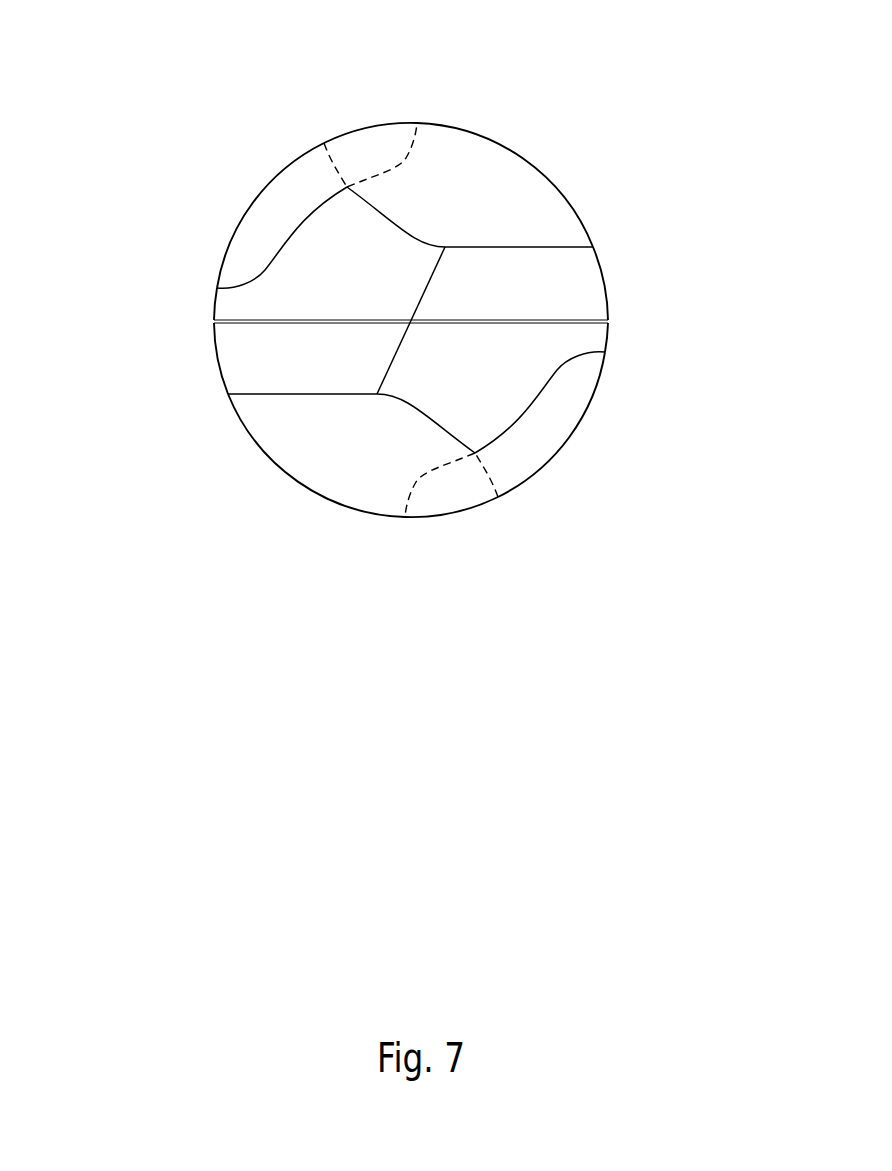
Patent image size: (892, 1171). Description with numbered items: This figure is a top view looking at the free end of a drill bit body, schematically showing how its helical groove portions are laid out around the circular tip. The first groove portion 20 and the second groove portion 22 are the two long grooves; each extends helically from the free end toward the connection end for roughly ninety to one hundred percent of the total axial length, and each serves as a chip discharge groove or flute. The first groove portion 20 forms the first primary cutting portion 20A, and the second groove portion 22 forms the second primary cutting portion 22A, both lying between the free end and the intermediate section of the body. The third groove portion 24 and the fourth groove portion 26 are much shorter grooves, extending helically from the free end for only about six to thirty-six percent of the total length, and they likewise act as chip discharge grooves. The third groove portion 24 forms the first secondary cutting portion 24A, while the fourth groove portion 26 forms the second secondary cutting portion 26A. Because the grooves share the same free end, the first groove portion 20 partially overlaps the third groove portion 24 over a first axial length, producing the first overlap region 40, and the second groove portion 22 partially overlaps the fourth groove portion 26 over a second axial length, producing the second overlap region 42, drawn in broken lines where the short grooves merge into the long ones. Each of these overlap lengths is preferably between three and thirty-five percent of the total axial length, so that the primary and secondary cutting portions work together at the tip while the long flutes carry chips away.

The first groove portion 20 is at (357, 452).
The first primary cutting portion 20A is at (248, 362).
The second groove portion 22 is at (470, 195).
The second primary cutting portion 22A is at (577, 285).
The third groove portion 24 is at (543, 442).
The first secondary cutting portion 24A is at (572, 333).
The fourth groove portion 26 is at (282, 205).
The second secondary cutting portion 26A is at (255, 312).
The first overlap region 40 is at (457, 497).
The second overlap region 42 is at (370, 150).